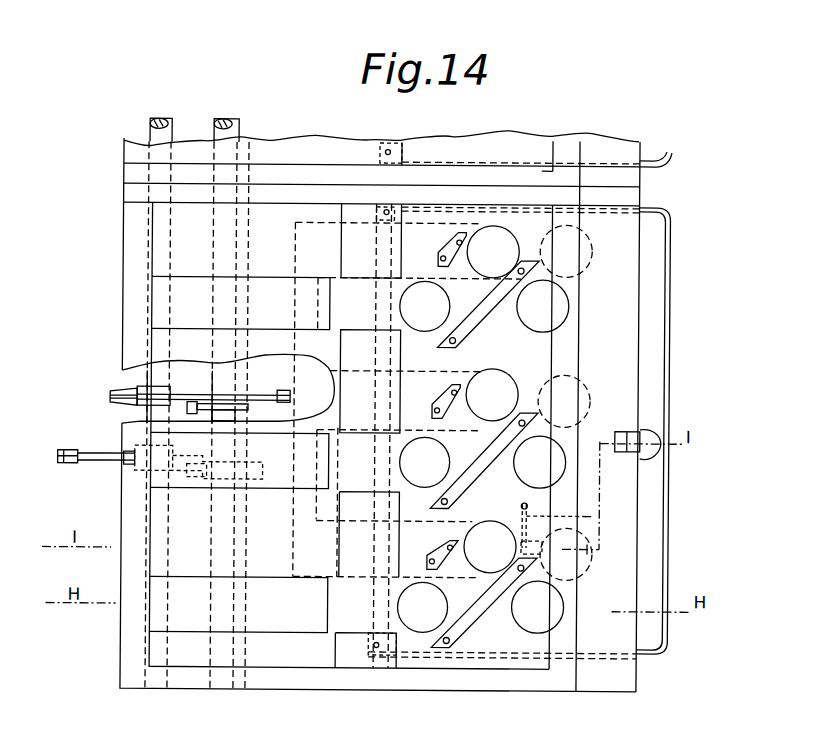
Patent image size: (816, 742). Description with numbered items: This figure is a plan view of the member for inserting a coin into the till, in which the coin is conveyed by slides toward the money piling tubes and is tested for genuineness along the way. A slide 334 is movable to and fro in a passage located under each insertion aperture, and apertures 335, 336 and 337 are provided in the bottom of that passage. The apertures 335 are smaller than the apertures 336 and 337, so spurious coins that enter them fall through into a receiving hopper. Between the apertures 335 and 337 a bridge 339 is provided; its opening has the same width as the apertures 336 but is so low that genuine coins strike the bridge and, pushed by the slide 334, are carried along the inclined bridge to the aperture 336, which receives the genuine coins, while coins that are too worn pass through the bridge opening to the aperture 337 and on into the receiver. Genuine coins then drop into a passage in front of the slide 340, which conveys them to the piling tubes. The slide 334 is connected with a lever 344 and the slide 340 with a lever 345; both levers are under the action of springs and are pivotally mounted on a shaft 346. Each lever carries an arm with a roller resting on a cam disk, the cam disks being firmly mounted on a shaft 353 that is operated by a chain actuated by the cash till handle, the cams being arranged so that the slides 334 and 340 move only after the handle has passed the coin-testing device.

The slide 334 is at (265, 290).
The aperture 335 is at (424, 456).
The aperture 336 is at (492, 399).
The aperture 337 is at (540, 456).
The bridge 339 is at (481, 315).
The slide 340 is at (462, 571).
The lever 344 is at (72, 450).
The lever 345 is at (123, 393).
The shaft 346 is at (150, 128).
The shaft 353 is at (238, 131).